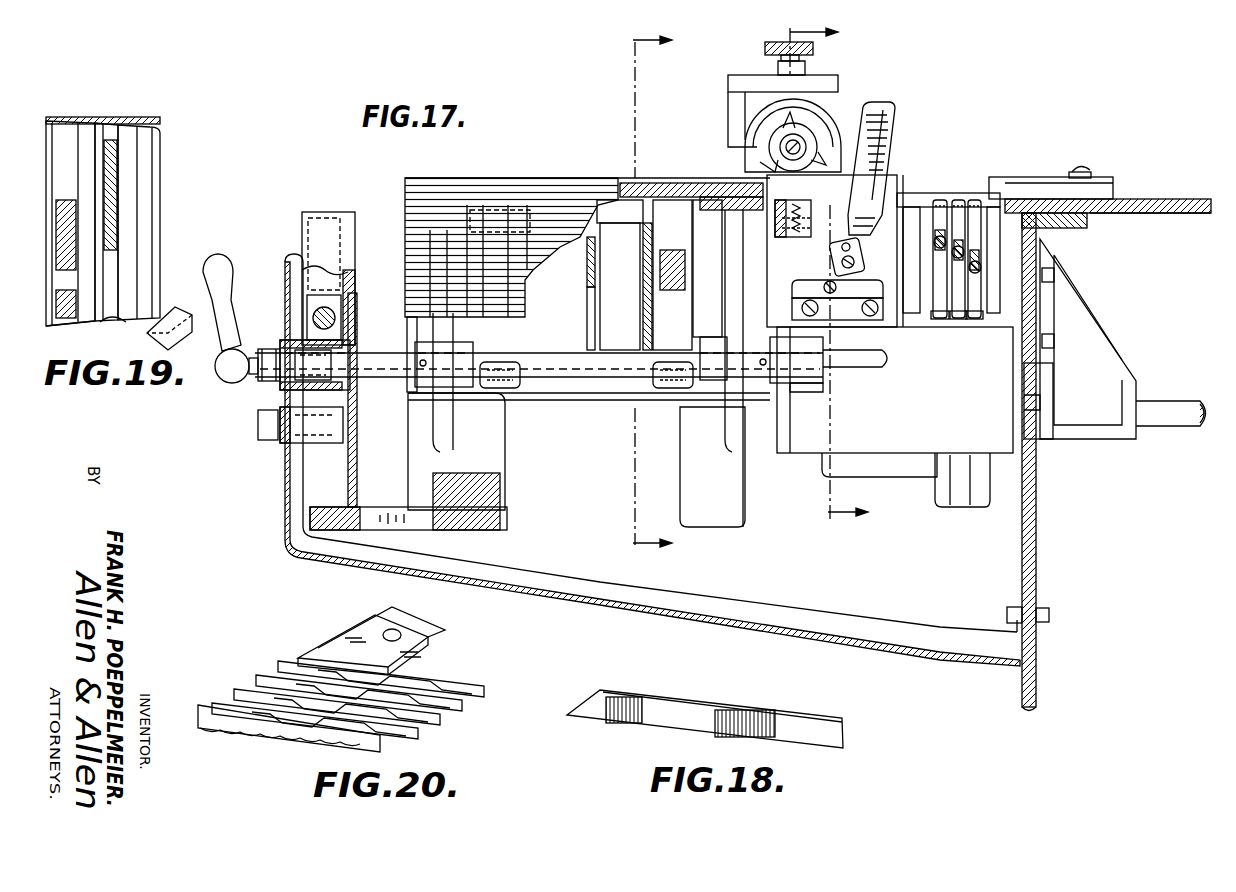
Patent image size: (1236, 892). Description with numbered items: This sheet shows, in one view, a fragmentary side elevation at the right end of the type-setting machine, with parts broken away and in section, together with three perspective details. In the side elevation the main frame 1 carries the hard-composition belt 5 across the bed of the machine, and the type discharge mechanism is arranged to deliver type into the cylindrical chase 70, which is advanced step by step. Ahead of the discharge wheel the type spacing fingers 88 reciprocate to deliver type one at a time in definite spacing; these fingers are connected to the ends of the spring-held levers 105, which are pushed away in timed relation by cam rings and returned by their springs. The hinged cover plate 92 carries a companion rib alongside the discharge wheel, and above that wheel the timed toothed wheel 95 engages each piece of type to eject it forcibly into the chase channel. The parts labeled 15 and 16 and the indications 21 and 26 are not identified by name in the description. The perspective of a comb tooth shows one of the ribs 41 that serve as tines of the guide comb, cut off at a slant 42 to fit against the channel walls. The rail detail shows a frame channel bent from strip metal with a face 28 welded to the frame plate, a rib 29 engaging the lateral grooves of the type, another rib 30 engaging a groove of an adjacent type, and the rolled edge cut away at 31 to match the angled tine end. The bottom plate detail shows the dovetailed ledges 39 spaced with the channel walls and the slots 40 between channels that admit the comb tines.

In FIG. 17, the main frame 1 is at (1064, 228).
In FIG. 17, the belt 5 is at (1150, 215).
In FIG. 17, the top plate 15 is at (1152, 199).
In FIG. 17, the laminated block 16 is at (437, 178).
In FIG. 17, the section line 21 is at (672, 294).
In FIG. 17, the section line 26 is at (843, 273).
In FIG. 19, the face 28 is at (70, 119).
In FIG. 19, the rib 29 is at (99, 122).
In FIG. 19, the rib 30 is at (148, 124).
In FIG. 19, the cut away 31 is at (85, 323).
In FIG. 20, the ledges 39 is at (457, 665).
In FIG. 20, the slot 40 is at (427, 720).
In FIG. 19, the ribs 41 is at (160, 336).
In FIG. 18, the ribs 41 is at (623, 722).
In FIG. 19, the slant cut 42 is at (122, 324).
In FIG. 18, the slant cut 42 is at (590, 705).
In FIG. 17, the cylindrical chase 70 is at (546, 178).
In FIG. 17, the type spacing fingers 88 is at (960, 199).
In FIG. 17, the hinged cover plate 92 is at (890, 178).
In FIG. 17, the timed toothed wheel 95 is at (770, 143).
In FIG. 17, the levers 105 is at (938, 320).